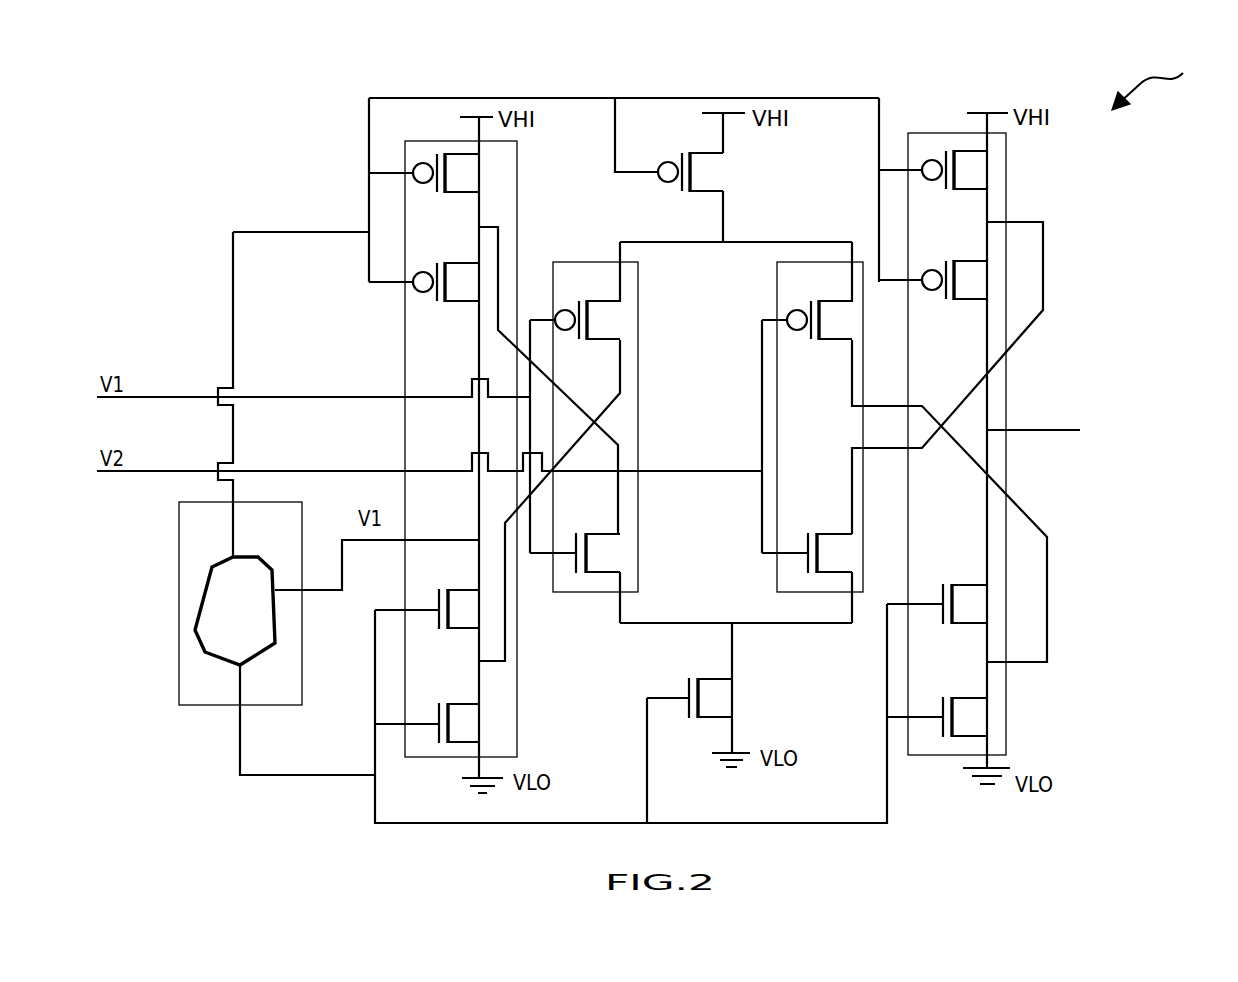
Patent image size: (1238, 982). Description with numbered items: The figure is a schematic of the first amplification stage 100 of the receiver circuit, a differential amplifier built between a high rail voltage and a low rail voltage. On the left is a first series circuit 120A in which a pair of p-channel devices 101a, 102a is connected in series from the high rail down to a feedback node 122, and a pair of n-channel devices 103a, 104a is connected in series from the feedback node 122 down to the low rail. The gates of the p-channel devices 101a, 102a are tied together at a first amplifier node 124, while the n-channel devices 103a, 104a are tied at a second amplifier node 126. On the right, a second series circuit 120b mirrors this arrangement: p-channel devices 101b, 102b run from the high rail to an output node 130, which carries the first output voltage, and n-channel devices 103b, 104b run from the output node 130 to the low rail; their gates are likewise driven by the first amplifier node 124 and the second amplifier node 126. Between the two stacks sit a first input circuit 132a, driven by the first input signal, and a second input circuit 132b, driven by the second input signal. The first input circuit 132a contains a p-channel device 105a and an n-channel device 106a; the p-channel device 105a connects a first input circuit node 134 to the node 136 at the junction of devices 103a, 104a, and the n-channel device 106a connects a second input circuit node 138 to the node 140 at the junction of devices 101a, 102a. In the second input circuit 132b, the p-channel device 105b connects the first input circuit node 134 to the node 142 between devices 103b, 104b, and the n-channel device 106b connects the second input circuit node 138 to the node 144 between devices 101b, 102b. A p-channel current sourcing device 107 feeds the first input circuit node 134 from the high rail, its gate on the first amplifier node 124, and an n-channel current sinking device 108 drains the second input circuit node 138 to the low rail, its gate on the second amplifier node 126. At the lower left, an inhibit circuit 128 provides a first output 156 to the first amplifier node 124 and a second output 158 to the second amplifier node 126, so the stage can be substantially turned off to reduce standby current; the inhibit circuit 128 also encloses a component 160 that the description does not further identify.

The first amplification stage 100 is at (1173, 83).
The p-channel device 101a is at (470, 167).
The p-channel device 101b is at (975, 165).
The p-channel device 102a is at (465, 316).
The p-channel device 102b is at (985, 278).
The n-channel device 103a is at (500, 600).
The n-channel device 103b is at (970, 598).
The n-channel device 104a is at (462, 724).
The n-channel device 104b is at (975, 722).
The first input circuit p-channel device 105a is at (600, 325).
The second input circuit p-channel device 105b is at (845, 328).
The first input circuit n-channel device 106a is at (600, 548).
The second input circuit n-channel device 106b is at (860, 548).
The p-channel current sourcing device 107 is at (705, 170).
The n-channel current sinking device 108 is at (715, 693).
The first series circuit 120A is at (517, 218).
The second series circuit 120b is at (1006, 205).
The feedback node 122 is at (479, 536).
The first amplifier node 124 is at (368, 98).
The second amplifier node 126 is at (375, 823).
The inhibit circuit 128 is at (178, 678).
The output node 130 is at (987, 435).
The first input circuit 132a is at (640, 298).
The second input circuit 132b is at (776, 298).
The first input circuit node 134 is at (735, 240).
The node 136 is at (505, 663).
The second input circuit node 138 is at (735, 625).
The node 140 is at (479, 227).
The node 142 is at (987, 665).
The node 144 is at (987, 232).
The first output 156 is at (233, 532).
The second output 158 is at (240, 680).
The logic element 160 is at (290, 592).